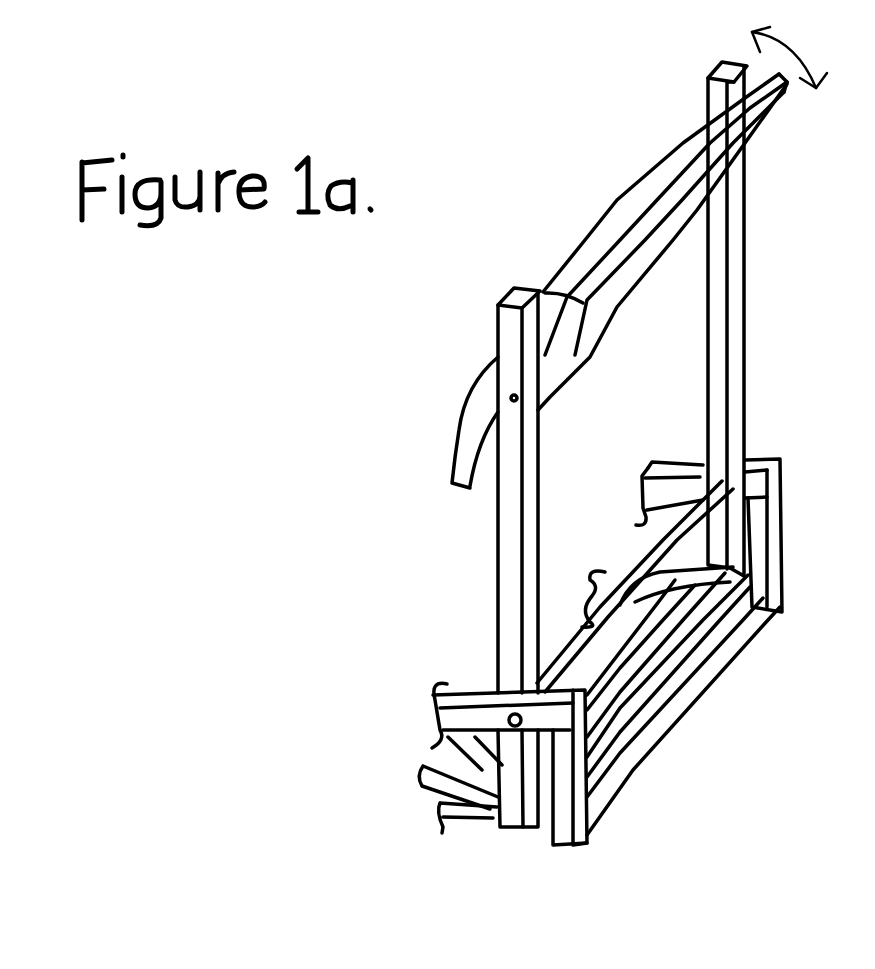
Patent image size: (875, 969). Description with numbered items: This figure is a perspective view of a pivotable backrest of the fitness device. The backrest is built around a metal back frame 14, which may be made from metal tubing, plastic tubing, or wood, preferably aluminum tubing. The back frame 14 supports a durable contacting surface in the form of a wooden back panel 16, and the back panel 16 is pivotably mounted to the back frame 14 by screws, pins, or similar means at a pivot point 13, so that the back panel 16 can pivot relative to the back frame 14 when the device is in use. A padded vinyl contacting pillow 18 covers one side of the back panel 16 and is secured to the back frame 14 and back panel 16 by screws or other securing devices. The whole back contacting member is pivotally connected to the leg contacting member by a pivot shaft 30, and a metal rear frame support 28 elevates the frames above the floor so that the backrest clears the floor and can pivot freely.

The pivot point 13 is at (520, 400).
The back frame 14 is at (510, 332).
The back panel 16 is at (708, 183).
The contacting pillow 18 is at (660, 170).
The rear frame support 28 is at (557, 850).
The pivot shaft 30 is at (640, 558).